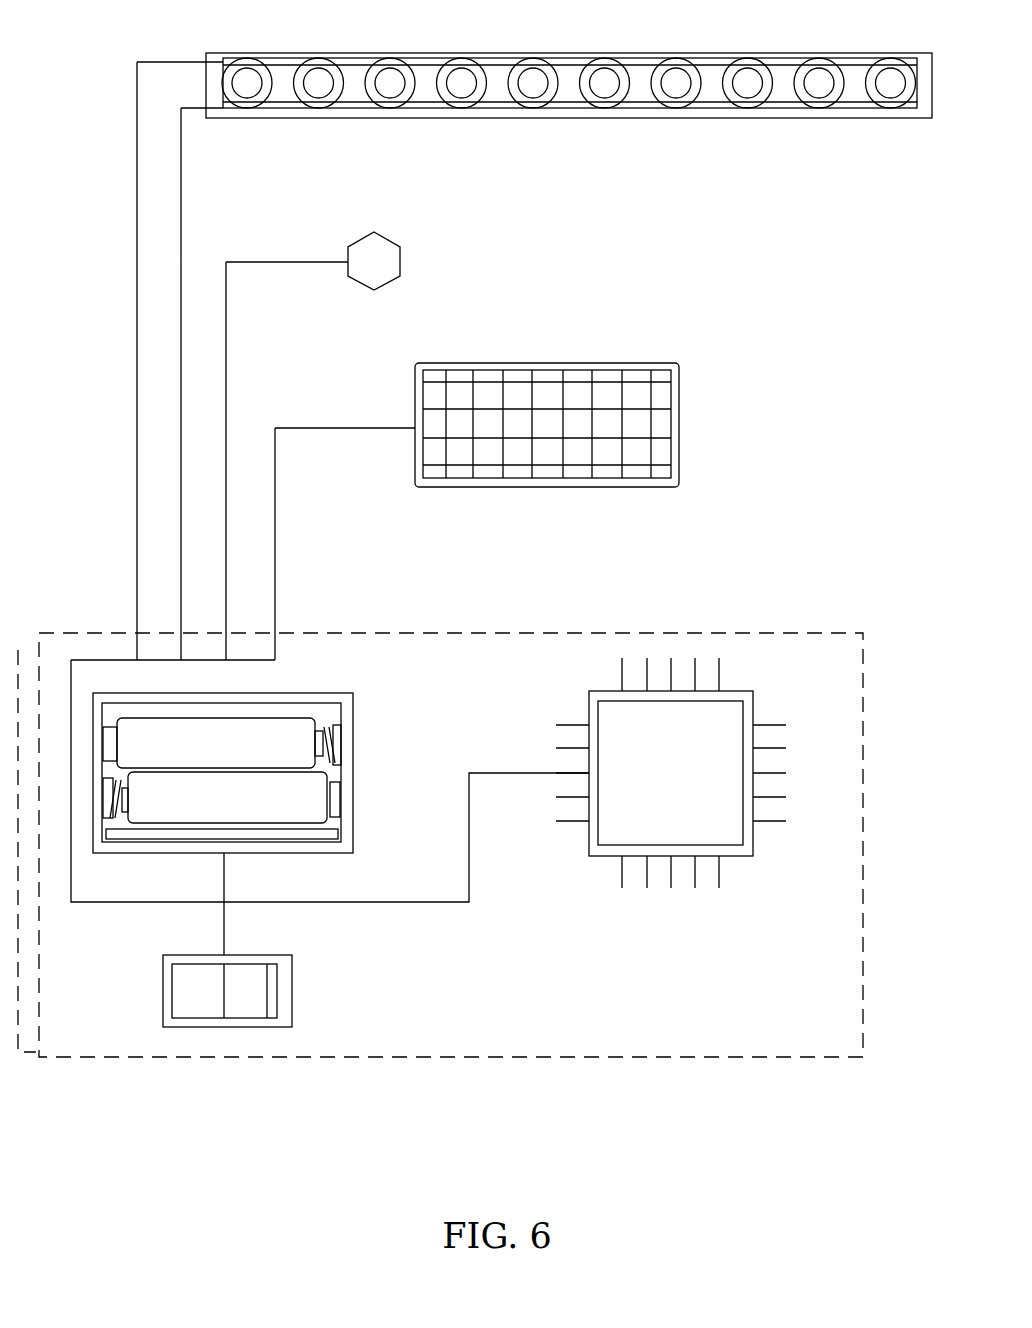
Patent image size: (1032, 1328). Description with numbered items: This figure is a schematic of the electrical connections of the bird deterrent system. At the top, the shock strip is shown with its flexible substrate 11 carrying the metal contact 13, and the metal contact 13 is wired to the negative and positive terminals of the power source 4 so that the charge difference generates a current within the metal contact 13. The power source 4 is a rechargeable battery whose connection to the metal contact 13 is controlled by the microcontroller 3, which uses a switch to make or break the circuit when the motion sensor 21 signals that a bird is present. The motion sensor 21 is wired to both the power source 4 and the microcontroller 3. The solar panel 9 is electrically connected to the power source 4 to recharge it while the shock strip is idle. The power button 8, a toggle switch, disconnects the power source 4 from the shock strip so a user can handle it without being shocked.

The microcontroller 3 is at (660, 786).
The power source 4 is at (160, 834).
The power button 8 is at (285, 967).
The solar panel 9 is at (677, 430).
The substrate 11 is at (343, 53).
The metal contact 13 is at (430, 63).
The motion sensor 21 is at (393, 258).